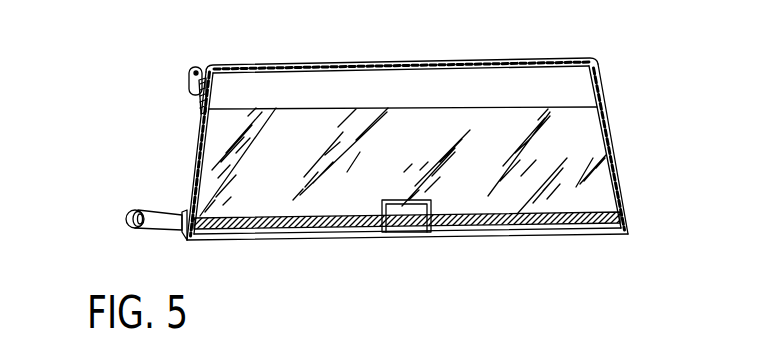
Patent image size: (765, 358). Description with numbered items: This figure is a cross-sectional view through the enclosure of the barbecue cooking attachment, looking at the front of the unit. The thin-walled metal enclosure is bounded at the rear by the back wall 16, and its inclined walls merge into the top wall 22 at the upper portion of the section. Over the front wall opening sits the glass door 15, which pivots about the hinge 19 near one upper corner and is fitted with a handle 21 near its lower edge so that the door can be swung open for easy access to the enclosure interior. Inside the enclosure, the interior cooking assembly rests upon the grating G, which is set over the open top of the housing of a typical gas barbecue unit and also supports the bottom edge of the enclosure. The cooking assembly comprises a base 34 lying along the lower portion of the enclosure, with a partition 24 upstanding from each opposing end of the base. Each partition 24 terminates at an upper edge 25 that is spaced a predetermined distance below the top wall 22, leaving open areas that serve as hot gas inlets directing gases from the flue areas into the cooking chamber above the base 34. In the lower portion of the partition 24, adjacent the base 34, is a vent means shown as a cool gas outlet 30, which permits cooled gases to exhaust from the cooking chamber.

The glass door 15 is at (198, 150).
The back wall 16 is at (608, 133).
The hinge 19 is at (192, 68).
The handle 21 is at (129, 208).
The top wall 22 is at (413, 60).
The partition 24 is at (447, 130).
The upper edge 25 is at (270, 109).
The cool gas outlet 30 is at (381, 207).
The base 34 is at (243, 217).
The grating G is at (476, 237).